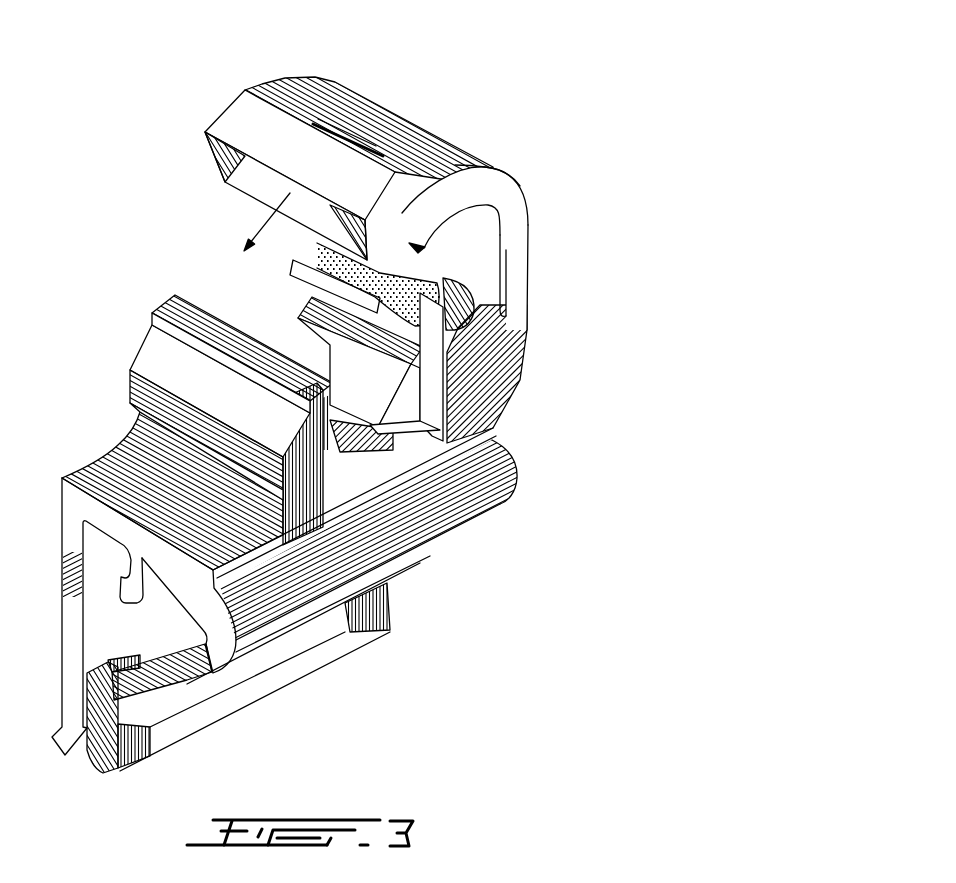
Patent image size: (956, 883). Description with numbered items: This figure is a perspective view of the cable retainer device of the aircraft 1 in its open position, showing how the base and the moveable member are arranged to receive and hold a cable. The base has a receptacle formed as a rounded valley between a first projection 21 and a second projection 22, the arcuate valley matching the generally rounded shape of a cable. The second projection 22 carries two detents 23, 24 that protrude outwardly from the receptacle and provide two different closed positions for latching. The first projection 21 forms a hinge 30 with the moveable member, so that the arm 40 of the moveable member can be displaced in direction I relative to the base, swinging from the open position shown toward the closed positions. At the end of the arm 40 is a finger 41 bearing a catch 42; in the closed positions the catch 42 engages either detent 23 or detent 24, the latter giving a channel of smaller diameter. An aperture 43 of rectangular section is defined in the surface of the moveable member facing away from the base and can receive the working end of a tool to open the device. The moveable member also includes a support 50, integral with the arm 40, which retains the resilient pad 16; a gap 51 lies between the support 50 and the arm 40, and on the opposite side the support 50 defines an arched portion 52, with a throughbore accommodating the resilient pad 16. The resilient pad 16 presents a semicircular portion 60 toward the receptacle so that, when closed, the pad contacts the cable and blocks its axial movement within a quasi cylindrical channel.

The aircraft 1 is at (262, 225).
The resilient pad 16 is at (447, 352).
The first projection 21 is at (300, 302).
The second projection 22 is at (305, 477).
The detent 23 is at (150, 322).
The detent 24 is at (130, 393).
The hinge 30 is at (430, 442).
The arm 40 is at (478, 441).
The finger 41 is at (437, 183).
The catch 42 is at (490, 200).
The aperture 43 is at (340, 133).
The support 50 is at (480, 290).
The gap 51 is at (512, 255).
The arched portion 52 is at (455, 330).
The semicircular portion 60 is at (408, 293).